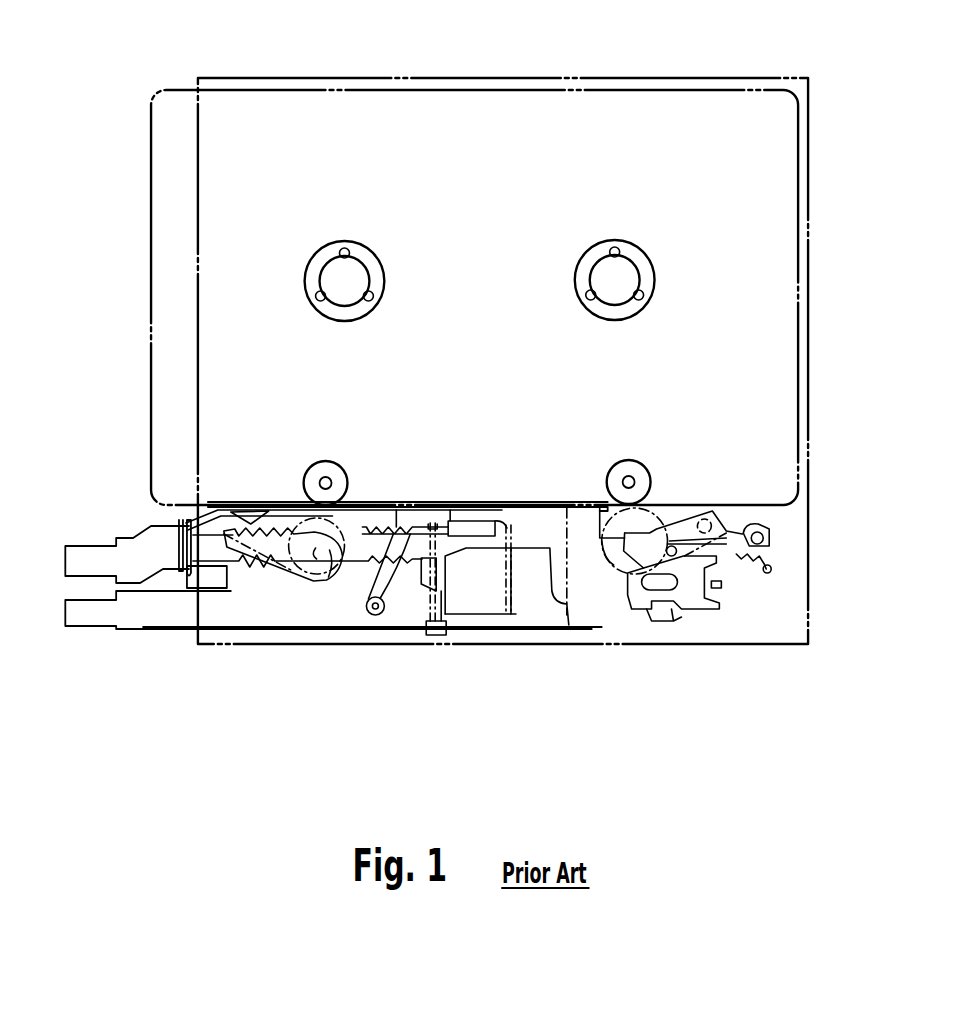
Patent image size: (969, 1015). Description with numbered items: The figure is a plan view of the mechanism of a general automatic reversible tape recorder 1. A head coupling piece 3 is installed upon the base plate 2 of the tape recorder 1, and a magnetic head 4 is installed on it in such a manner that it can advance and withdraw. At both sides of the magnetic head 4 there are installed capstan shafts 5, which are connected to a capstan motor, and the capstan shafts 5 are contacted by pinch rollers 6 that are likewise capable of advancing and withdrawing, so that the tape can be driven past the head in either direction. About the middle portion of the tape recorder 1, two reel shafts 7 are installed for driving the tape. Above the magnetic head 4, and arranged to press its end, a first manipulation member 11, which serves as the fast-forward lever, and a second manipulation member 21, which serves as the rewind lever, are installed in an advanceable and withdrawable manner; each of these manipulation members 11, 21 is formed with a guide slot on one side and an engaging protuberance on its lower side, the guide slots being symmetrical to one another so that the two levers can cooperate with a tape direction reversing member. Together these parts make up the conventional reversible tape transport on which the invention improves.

The tape recorder 1 is at (148, 148).
The base plate 2 is at (660, 75).
The head coupling piece 3 is at (554, 617).
The magnetic head 4 is at (484, 601).
The capstan shafts 5 is at (311, 461).
The pinch rollers 6 is at (288, 500).
The reel shafts 7 is at (312, 262).
The first manipulation member (FF lever) 11 is at (101, 615).
The second manipulation member (REW lever) 21 is at (82, 548).